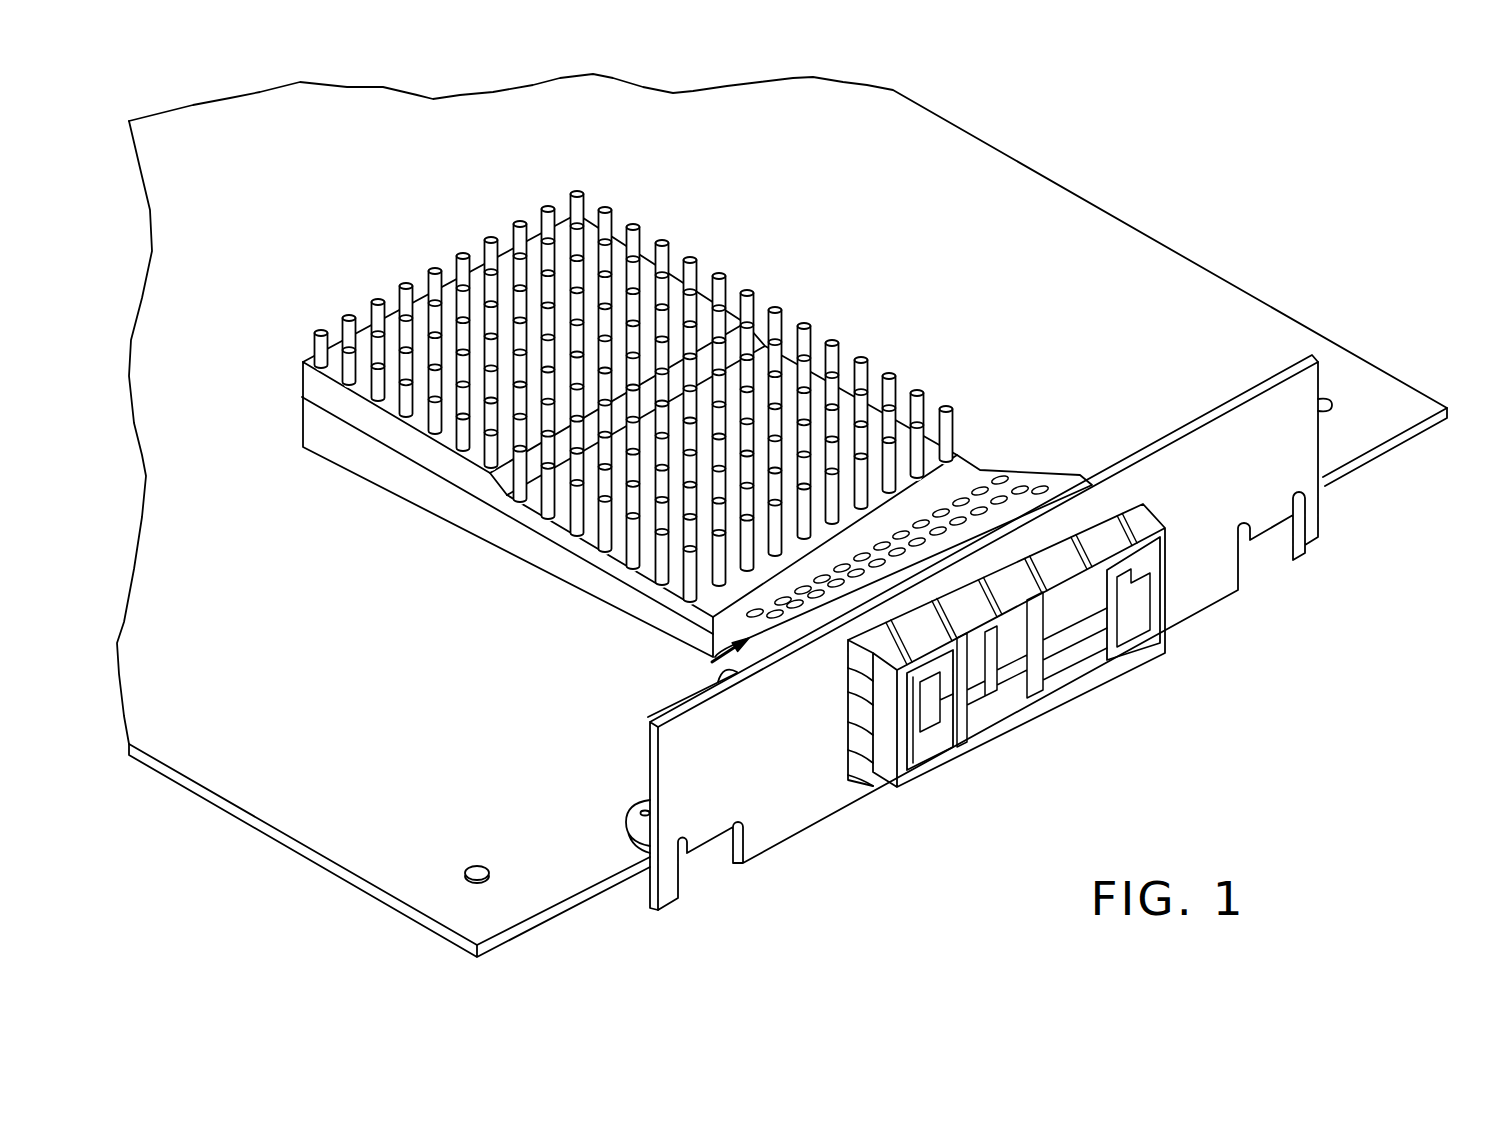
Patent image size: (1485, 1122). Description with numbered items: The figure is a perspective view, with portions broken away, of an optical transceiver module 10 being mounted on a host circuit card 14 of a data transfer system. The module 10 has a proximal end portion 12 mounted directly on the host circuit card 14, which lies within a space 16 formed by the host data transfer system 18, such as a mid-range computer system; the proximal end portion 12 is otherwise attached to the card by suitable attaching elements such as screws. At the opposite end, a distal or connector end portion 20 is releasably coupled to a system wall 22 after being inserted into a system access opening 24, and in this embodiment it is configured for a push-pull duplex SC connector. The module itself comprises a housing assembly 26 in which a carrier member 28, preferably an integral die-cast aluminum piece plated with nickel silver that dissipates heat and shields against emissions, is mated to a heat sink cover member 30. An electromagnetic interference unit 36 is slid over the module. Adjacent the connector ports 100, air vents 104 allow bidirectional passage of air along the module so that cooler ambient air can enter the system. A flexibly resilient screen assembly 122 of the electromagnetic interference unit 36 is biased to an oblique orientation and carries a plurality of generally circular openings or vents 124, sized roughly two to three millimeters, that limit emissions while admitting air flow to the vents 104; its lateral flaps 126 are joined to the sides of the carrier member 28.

The optical transceiver module 10 is at (634, 393).
The proximal end portion 12 is at (734, 439).
The host circuit card 14 is at (782, 515).
The space 16 is at (1011, 121).
The host data transfer system 18 is at (984, 558).
The connector end portion 20 is at (984, 558).
The system wall 22 is at (760, 762).
The system access opening 24 is at (988, 653).
The housing assembly 26 is at (610, 577).
The carrier member 28 is at (445, 518).
The heat sink cover member 30 is at (365, 420).
The electromagnetic interference unit 36 is at (911, 536).
The connector ports 100 is at (1056, 670).
The air vents 104 is at (1135, 620).
The screen assembly 122 is at (678, 672).
The openings or vents 124 is at (1028, 480).
The lateral flaps 126 is at (667, 705).